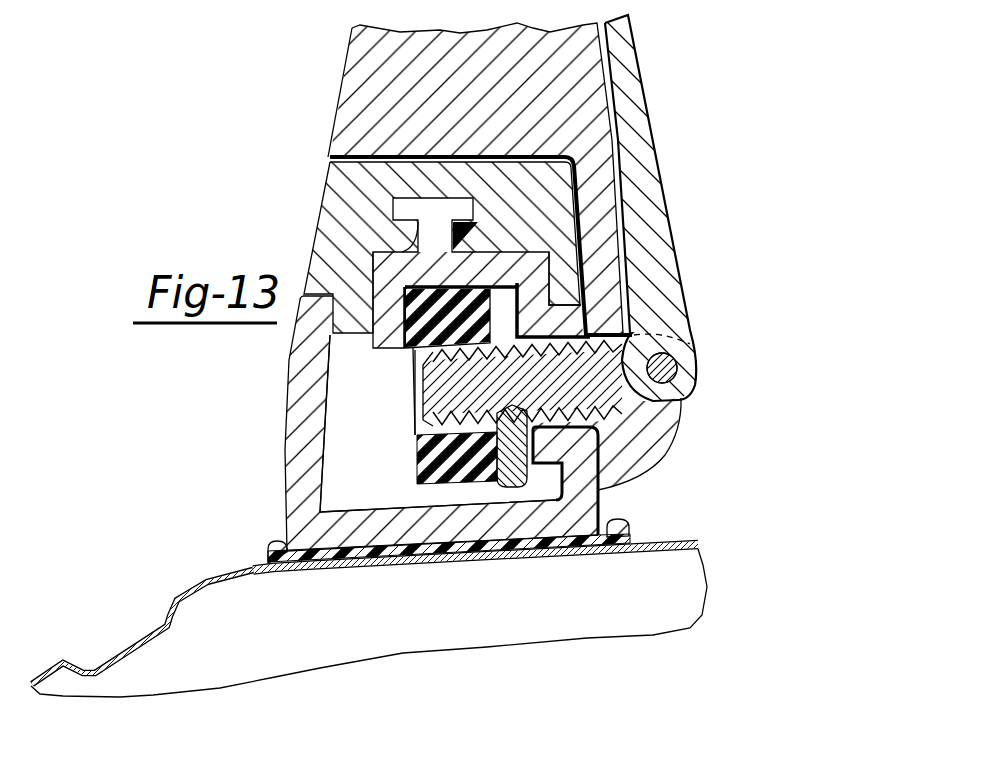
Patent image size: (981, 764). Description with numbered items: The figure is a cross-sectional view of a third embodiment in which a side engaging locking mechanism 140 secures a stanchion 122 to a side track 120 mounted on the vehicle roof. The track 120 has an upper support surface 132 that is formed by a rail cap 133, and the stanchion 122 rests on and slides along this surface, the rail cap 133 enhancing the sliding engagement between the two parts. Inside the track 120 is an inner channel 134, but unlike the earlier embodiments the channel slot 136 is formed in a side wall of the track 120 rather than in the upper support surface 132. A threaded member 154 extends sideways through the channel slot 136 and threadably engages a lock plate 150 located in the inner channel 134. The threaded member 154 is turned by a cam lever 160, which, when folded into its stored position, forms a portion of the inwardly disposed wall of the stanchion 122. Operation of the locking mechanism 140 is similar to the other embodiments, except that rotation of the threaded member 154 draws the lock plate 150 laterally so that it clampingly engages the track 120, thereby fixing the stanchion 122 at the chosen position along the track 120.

The side track 120 is at (300, 500).
The stanchion 122 is at (343, 96).
The upper support surface 132 is at (387, 156).
The rail cap 133 is at (335, 245).
The inner channel 134 is at (322, 457).
The channel slot 136 is at (590, 422).
The side engaging locking mechanism 140 is at (722, 362).
The lock plate 150 is at (518, 482).
The threaded member 154 is at (625, 331).
The cam lever 160 is at (644, 160).